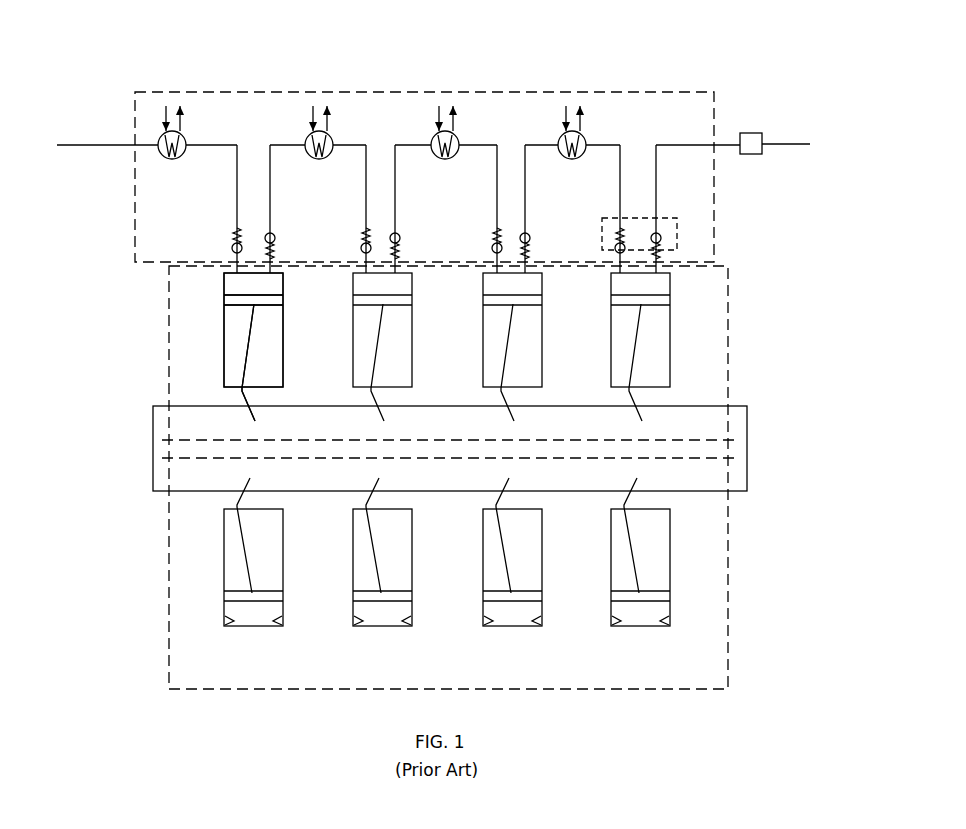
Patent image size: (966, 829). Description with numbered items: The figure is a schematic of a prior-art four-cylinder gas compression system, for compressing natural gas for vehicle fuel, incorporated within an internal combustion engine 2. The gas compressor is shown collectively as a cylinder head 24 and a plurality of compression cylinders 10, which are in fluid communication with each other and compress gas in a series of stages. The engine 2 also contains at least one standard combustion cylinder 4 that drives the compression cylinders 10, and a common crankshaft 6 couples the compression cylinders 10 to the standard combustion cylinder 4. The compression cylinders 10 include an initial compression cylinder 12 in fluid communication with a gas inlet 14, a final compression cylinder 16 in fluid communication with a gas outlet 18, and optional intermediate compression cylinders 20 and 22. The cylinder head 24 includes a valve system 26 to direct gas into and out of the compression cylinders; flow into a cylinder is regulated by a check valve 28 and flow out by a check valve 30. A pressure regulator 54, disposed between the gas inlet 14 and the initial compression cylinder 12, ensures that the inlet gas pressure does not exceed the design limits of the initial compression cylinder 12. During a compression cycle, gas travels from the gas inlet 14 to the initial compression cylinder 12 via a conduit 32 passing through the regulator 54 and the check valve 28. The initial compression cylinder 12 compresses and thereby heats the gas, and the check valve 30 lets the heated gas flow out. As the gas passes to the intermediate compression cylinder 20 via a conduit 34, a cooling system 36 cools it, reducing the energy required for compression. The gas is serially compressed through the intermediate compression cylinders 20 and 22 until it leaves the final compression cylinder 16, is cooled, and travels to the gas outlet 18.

The internal combustion engine 2 is at (884, 216).
The standard combustion cylinder 4 is at (674, 573).
The common crankshaft 6 is at (750, 452).
The compression cylinders 10 is at (168, 312).
The initial compression cylinder 12 is at (672, 367).
The gas inlet 14 is at (799, 144).
The final compression cylinder 16 is at (285, 362).
The gas outlet 18 is at (94, 146).
The intermediate compression cylinder 20 is at (544, 368).
The intermediate compression cylinder 22 is at (414, 368).
The cylinder head 24 is at (131, 169).
The valve system 26 is at (672, 216).
The check valve 28 is at (662, 238).
The check valve 30 is at (612, 238).
The conduit 32 is at (662, 141).
The conduit 34 is at (620, 141).
The cooling system 36 is at (586, 132).
The pressure regulator 54 is at (764, 157).